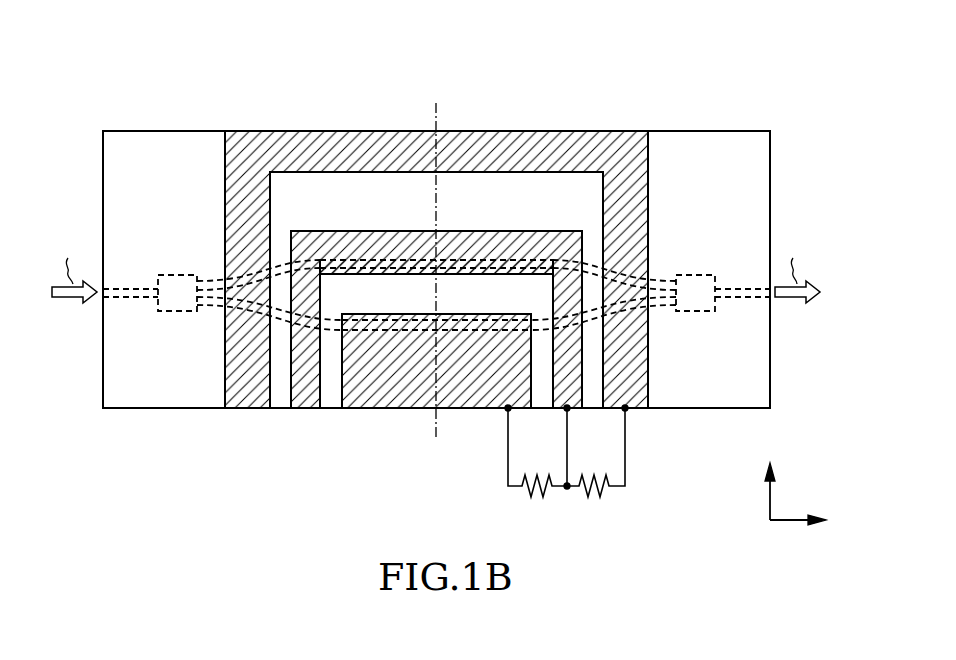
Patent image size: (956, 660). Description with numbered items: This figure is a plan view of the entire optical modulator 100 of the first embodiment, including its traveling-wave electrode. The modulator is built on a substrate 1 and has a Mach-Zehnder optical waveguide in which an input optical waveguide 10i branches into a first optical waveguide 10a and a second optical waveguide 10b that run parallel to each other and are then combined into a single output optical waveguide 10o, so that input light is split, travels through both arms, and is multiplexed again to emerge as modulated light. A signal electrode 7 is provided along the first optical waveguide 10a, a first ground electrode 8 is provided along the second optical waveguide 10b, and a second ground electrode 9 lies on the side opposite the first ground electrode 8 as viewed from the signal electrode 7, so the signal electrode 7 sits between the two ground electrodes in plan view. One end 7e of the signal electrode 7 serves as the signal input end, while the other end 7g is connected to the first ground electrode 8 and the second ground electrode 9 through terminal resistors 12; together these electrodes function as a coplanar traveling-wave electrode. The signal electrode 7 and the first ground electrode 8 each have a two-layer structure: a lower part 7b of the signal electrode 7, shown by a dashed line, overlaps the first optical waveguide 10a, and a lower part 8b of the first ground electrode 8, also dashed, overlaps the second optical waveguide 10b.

The optical modulator 100 is at (626, 60).
The substrate 1 is at (132, 130).
The second ground electrode 9 is at (538, 150).
The signal electrode 7 is at (427, 273).
The lower part of the signal electrode 7b is at (330, 258).
The one end of the signal electrode 7e is at (308, 410).
The other end of the signal electrode 7g is at (555, 410).
The first optical waveguide 10a is at (375, 260).
The second optical waveguide 10b is at (368, 410).
The first ground electrode 8 is at (432, 404).
The lower part of the first ground electrode 8b is at (410, 383).
The input optical waveguide 10i is at (131, 298).
The output optical waveguide 10o is at (733, 298).
The terminal resistors 12 is at (610, 498).